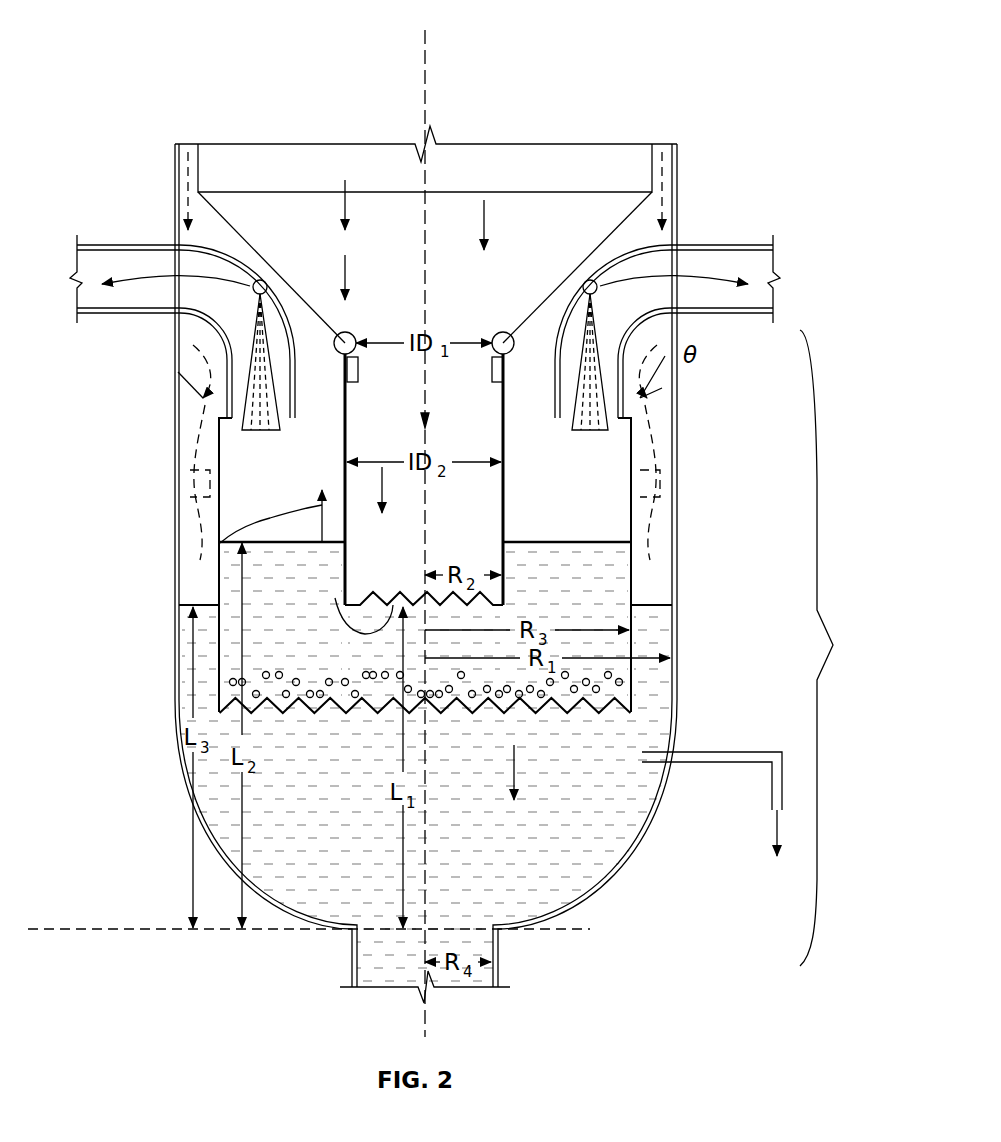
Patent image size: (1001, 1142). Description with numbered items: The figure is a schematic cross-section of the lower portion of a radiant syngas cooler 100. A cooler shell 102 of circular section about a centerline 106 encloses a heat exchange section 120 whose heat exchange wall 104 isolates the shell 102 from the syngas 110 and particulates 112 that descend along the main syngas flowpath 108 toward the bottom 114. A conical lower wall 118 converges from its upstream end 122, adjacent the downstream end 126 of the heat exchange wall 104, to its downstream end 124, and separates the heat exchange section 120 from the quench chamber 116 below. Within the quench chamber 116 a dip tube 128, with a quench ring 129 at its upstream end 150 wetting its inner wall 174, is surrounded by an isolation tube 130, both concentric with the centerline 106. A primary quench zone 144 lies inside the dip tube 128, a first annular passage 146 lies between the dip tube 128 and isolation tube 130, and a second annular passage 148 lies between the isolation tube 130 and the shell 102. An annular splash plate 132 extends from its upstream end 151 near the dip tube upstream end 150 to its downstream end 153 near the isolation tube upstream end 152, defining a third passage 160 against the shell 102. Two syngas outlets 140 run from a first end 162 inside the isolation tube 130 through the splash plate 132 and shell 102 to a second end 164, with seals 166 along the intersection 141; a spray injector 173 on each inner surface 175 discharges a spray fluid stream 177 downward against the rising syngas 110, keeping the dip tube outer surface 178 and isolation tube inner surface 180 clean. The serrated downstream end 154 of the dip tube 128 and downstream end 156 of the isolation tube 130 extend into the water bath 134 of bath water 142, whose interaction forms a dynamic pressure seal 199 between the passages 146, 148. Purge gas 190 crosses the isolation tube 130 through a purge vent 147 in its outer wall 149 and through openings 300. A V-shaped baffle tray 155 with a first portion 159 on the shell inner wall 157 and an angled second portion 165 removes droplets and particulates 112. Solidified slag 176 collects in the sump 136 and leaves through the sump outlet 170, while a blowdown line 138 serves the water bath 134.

The syngas cooler 100 is at (145, 40).
The cooler shell 102 is at (678, 208).
The heat exchange wall 104 is at (650, 172).
The centerline 106 is at (433, 90).
The main syngas flowpath 108 is at (350, 207).
The syngas 110 is at (165, 281).
The particulates 112 is at (488, 232).
The bottom 114 is at (582, 912).
The quench chamber 116 is at (842, 648).
The lower wall 118 is at (626, 222).
The heat exchange section 120 is at (425, 185).
The upstream end of lower wall 122 is at (679, 244).
The downstream end of lower wall 124 is at (505, 333).
The downstream end of heat exchange wall 126 is at (677, 172).
The dip tube 128 is at (500, 412).
The quench ring 129 is at (360, 370).
The isolation tube 130 is at (645, 500).
The splash plate 132 is at (538, 338).
The water bath 134 is at (214, 782).
The sump 136 is at (309, 914).
The blowdown line 138 is at (725, 752).
The syngas outlet 140 is at (136, 243).
The intersection 141 is at (641, 378).
The bath water 142 is at (776, 830).
The primary quench zone 144 is at (424, 479).
The first annular passage 146 is at (425, 565).
The purge vent 147 is at (219, 476).
The second annular passage 148 is at (190, 586).
The outer wall of isolation tube 149 is at (215, 512).
The upstream end of dip tube 150 is at (530, 390).
The upstream end of splash plate 151 is at (298, 362).
The upstream end of isolation tube 152 is at (219, 442).
The downstream end of splash plate 153 is at (219, 404).
The downstream end of dip tube 154 is at (362, 597).
The baffle tray 155 is at (182, 378).
The downstream end of isolation tube 156 is at (228, 690).
The inner wall of shell 157 is at (672, 552).
The first portion of baffle tray 159 is at (661, 390).
The third passage 160 is at (214, 232).
The first end of outlet 162 is at (345, 400).
The second end of outlet 164 is at (80, 314).
The second portion of baffle tray 165 is at (690, 398).
The seals 166 is at (655, 437).
The sump outlet 170 is at (350, 958).
The spray injector 173 is at (250, 286).
The inner wall of dip tube 174 is at (500, 472).
The inner surface of outlet 175 is at (688, 252).
The solidified slag 176 is at (603, 780).
The spray fluid stream 177 is at (273, 289).
The outer surface of dip tube 178 is at (505, 432).
The inner surface of isolation tube 180 is at (222, 498).
The purge gas 190 is at (186, 162).
The dynamic pressure seal 199 is at (483, 714).
The openings 300 is at (634, 690).